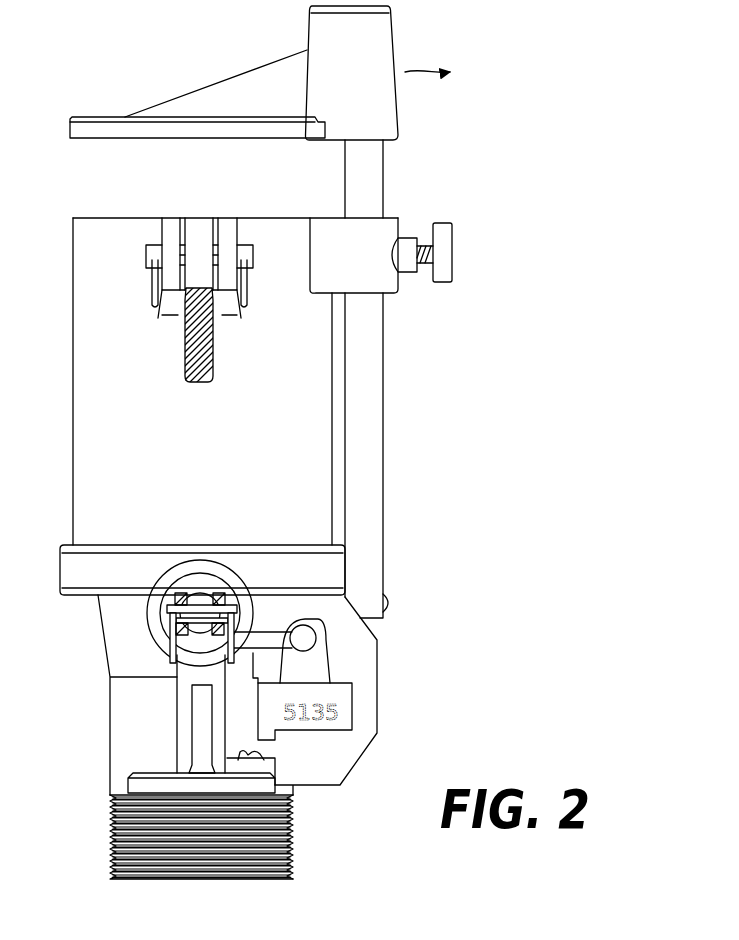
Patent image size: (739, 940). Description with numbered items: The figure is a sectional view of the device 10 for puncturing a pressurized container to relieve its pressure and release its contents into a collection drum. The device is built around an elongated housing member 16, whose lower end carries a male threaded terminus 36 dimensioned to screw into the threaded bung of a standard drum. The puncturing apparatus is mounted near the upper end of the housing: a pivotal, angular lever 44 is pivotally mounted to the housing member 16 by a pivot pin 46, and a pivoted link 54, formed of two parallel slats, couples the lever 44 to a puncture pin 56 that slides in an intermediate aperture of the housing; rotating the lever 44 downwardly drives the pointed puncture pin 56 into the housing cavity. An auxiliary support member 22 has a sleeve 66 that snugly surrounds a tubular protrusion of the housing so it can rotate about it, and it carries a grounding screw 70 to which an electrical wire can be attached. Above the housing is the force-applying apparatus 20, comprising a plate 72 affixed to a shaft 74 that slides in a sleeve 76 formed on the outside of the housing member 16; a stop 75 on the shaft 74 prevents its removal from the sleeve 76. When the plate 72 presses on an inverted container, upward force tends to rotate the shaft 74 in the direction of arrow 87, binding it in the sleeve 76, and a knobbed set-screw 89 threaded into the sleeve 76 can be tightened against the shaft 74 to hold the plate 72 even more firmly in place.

The device 10 is at (466, 190).
The elongated housing member 16 is at (73, 375).
The force-applying apparatus 20 is at (402, 50).
The auxiliary support member 22 is at (185, 713).
The threaded terminus 36 is at (110, 822).
The pivotal angular lever 44 is at (200, 225).
The pivot pin 46 is at (146, 256).
The pivoted link 54 is at (182, 597).
The puncture pin 56 is at (202, 597).
The sleeve 66 is at (157, 617).
The grounding screw 70 is at (265, 757).
The plate 72 is at (97, 122).
The shaft 74 is at (346, 177).
The stop 75 is at (396, 603).
The sleeve 76 is at (392, 230).
The arrow 87 is at (427, 75).
The knobbed set-screw 89 is at (452, 250).